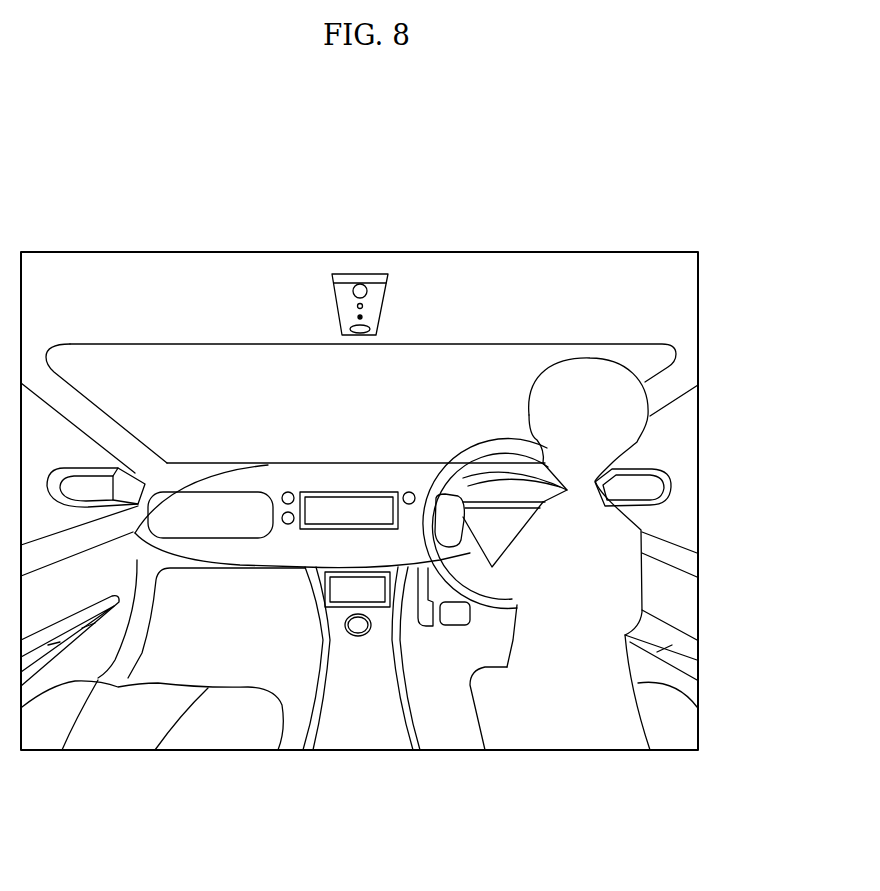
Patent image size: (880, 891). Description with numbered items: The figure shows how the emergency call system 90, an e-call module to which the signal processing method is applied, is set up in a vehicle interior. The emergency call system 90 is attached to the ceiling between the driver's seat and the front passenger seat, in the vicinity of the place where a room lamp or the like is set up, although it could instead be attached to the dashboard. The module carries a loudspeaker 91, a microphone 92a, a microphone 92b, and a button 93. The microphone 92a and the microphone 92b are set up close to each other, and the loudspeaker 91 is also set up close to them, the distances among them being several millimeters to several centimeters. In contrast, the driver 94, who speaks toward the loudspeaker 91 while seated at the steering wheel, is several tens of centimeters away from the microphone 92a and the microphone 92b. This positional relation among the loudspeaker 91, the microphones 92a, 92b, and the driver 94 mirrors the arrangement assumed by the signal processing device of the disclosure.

The emergency call system 90 is at (386, 268).
The loudspeaker 91 is at (368, 291).
The microphone 92a is at (357, 306).
The microphone 92b is at (357, 317).
The button 93 is at (372, 330).
The driver 94 is at (630, 515).